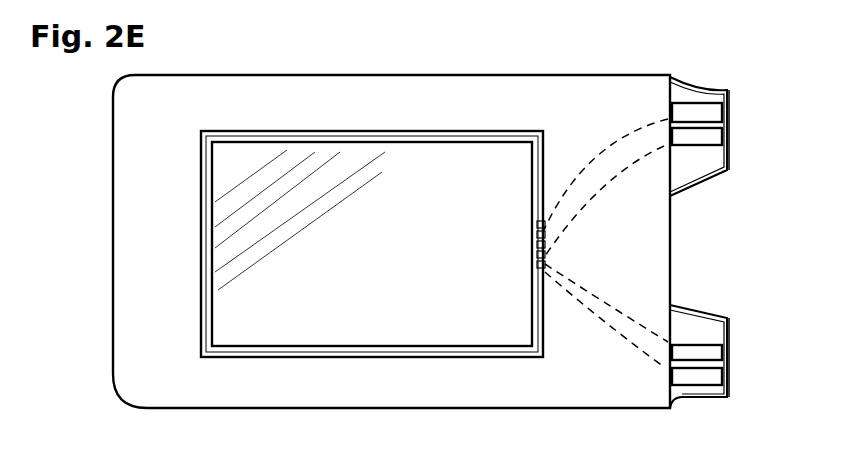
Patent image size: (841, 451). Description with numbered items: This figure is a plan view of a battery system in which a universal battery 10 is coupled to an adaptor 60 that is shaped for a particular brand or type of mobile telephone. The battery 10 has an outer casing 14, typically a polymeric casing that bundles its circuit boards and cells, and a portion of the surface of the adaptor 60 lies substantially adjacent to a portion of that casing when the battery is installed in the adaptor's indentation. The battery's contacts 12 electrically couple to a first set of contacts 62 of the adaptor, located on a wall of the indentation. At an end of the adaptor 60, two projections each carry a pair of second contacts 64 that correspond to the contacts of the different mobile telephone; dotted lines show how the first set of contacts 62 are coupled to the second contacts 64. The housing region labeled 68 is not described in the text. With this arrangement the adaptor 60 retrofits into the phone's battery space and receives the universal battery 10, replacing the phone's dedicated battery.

The universal battery 10 is at (201, 243).
The contacts 12 is at (537, 264).
The outer casing 14 is at (407, 253).
The adaptor 60 is at (695, 252).
The first set of contacts 62 is at (545, 266).
The second contacts 64 is at (727, 106).
The housing body 68 is at (587, 391).